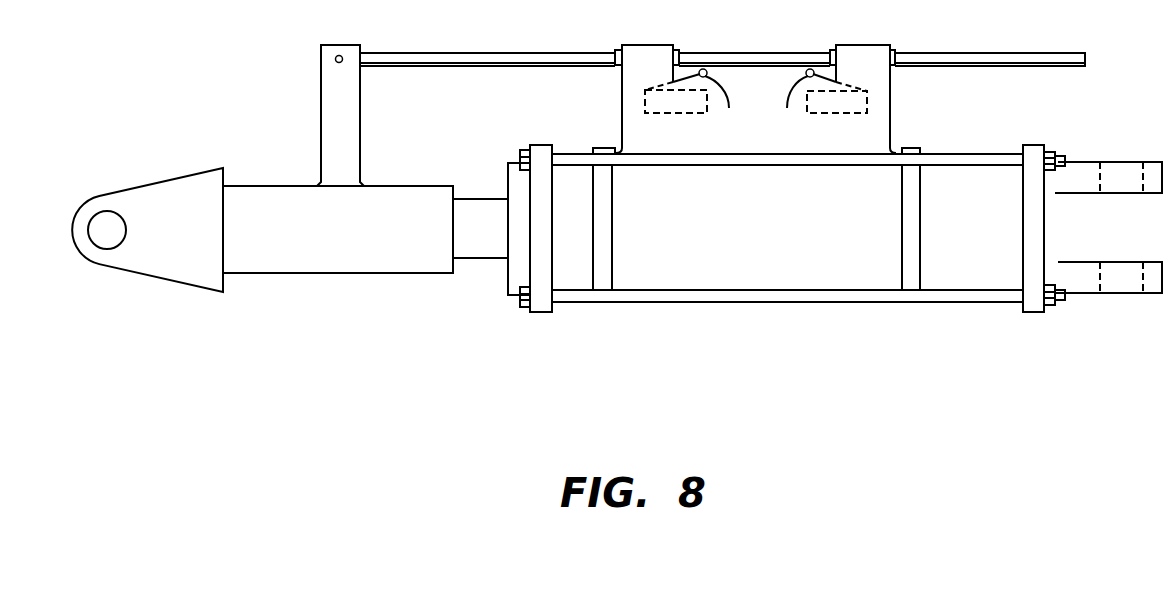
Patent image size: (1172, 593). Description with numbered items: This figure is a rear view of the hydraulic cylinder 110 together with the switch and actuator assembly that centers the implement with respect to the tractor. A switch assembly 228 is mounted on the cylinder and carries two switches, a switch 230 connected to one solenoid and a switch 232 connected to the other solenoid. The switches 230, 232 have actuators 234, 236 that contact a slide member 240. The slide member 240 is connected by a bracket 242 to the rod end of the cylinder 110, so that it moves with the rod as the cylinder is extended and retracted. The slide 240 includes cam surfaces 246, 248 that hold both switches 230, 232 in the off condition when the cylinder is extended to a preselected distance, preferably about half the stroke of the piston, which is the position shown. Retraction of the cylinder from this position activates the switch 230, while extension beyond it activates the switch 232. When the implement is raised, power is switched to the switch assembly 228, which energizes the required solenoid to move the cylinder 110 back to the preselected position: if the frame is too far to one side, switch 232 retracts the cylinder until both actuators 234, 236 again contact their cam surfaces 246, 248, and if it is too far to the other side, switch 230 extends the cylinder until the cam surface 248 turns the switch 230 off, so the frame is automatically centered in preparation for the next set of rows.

The cylinder 110 is at (762, 283).
The switch assembly 228 is at (622, 130).
The switch 230 is at (867, 103).
The switch 232 is at (645, 101).
The actuator 234 is at (800, 103).
The actuator 236 is at (710, 103).
The slide member 240 is at (500, 53).
The bracket 242 is at (321, 88).
The cam surface 246 is at (468, 67).
The cam surface 248 is at (1013, 65).